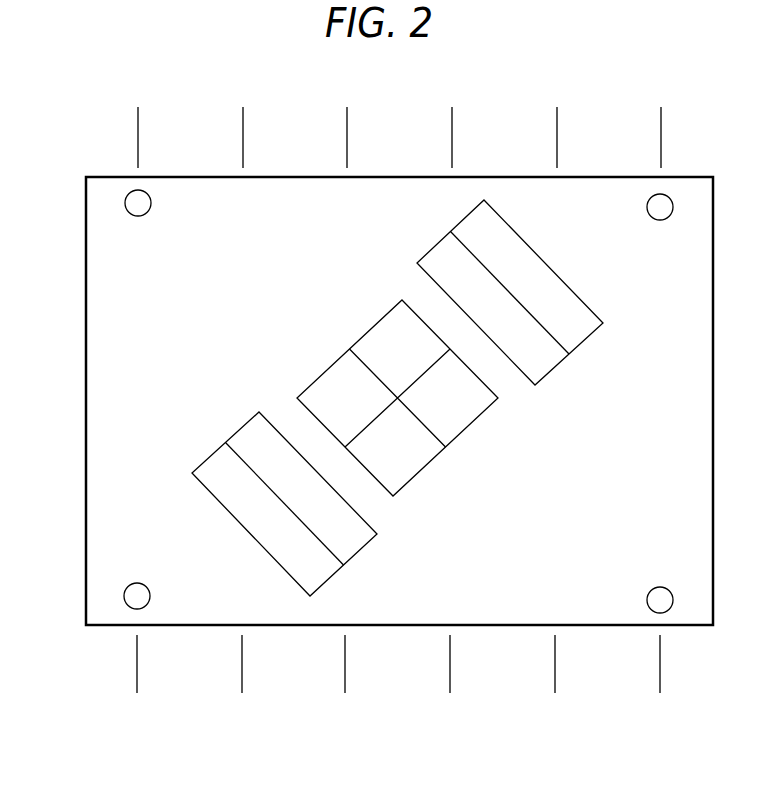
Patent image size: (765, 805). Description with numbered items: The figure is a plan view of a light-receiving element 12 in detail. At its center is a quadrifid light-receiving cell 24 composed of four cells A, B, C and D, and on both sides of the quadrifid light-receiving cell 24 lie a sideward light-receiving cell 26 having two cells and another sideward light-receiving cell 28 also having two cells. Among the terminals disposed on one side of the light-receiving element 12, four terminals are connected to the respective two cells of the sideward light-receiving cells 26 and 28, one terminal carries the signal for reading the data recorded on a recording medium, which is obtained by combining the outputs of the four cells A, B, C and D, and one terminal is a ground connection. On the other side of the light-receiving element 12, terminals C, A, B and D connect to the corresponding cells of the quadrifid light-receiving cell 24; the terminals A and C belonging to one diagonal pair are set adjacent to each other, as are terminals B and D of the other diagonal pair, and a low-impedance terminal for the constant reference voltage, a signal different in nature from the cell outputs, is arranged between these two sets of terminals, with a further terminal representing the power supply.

The light-receiving element 12 is at (86, 400).
The quadrifid light-receiving cell 24 is at (314, 368).
The sideward light-receiving cell 26 is at (425, 240).
The sideward light-receiving cell 28 is at (198, 452).